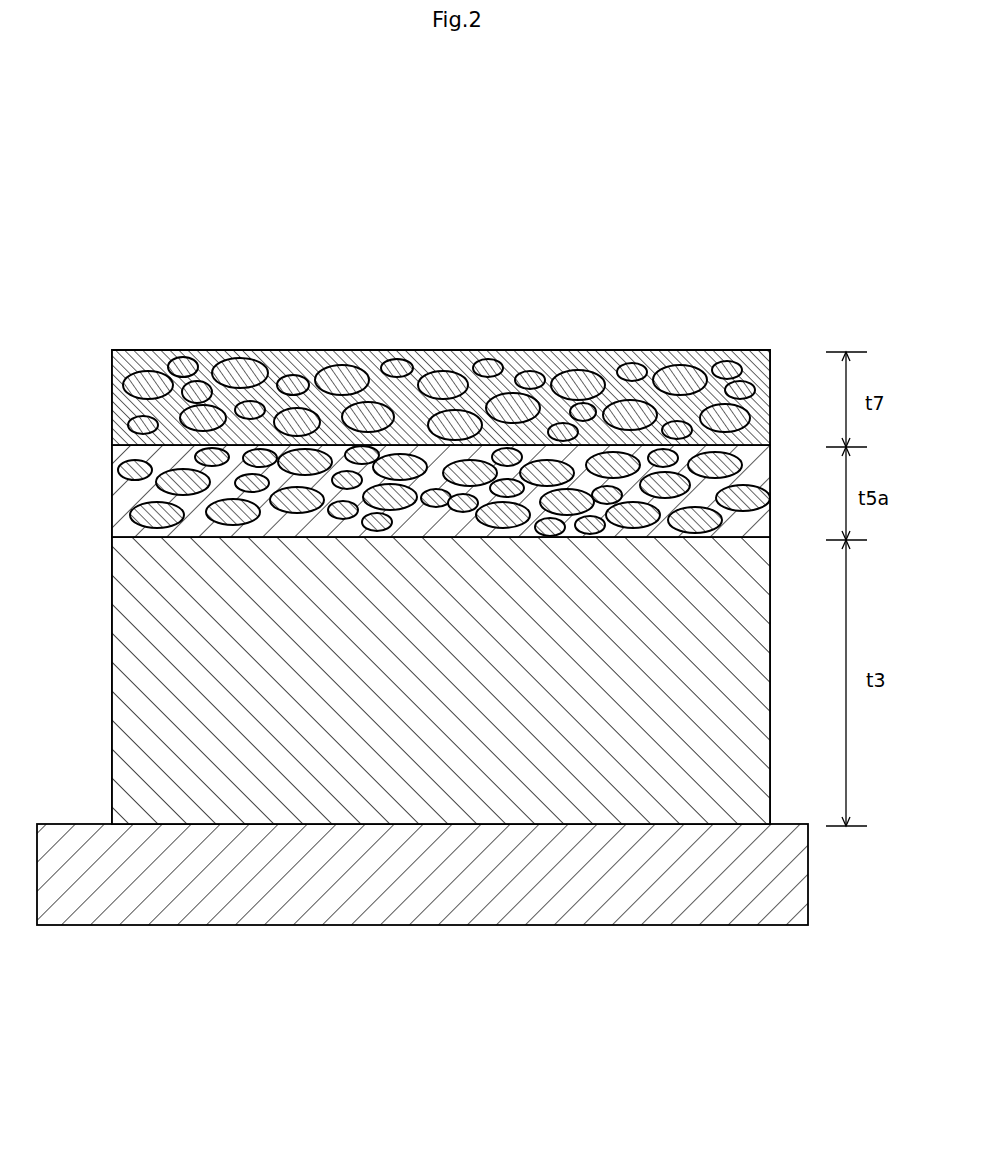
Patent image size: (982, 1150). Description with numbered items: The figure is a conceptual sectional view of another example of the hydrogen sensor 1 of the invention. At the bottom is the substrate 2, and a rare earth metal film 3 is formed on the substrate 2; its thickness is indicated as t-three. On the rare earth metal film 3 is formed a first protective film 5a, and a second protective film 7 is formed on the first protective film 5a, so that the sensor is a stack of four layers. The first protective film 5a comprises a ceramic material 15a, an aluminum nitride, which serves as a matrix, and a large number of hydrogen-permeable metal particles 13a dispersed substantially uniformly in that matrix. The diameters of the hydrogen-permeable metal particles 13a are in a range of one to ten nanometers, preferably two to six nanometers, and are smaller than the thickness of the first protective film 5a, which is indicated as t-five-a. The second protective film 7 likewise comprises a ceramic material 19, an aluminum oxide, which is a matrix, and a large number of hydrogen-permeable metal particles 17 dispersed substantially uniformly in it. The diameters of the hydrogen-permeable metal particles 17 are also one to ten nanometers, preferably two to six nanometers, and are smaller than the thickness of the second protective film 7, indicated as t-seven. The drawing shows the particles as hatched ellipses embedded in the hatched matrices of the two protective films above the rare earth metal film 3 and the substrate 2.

The hydrogen sensor 1 is at (455, 315).
The substrate 2 is at (425, 895).
The rare earth metal film 3 is at (93, 690).
The first protective film 5a is at (395, 491).
The second protective film 7 is at (401, 379).
The hydrogen-permeable metal particles 13a is at (112, 446).
The ceramic material 15a is at (112, 507).
The hydrogen-permeable metal particles 17 is at (118, 350).
The ceramic material 19 is at (121, 409).